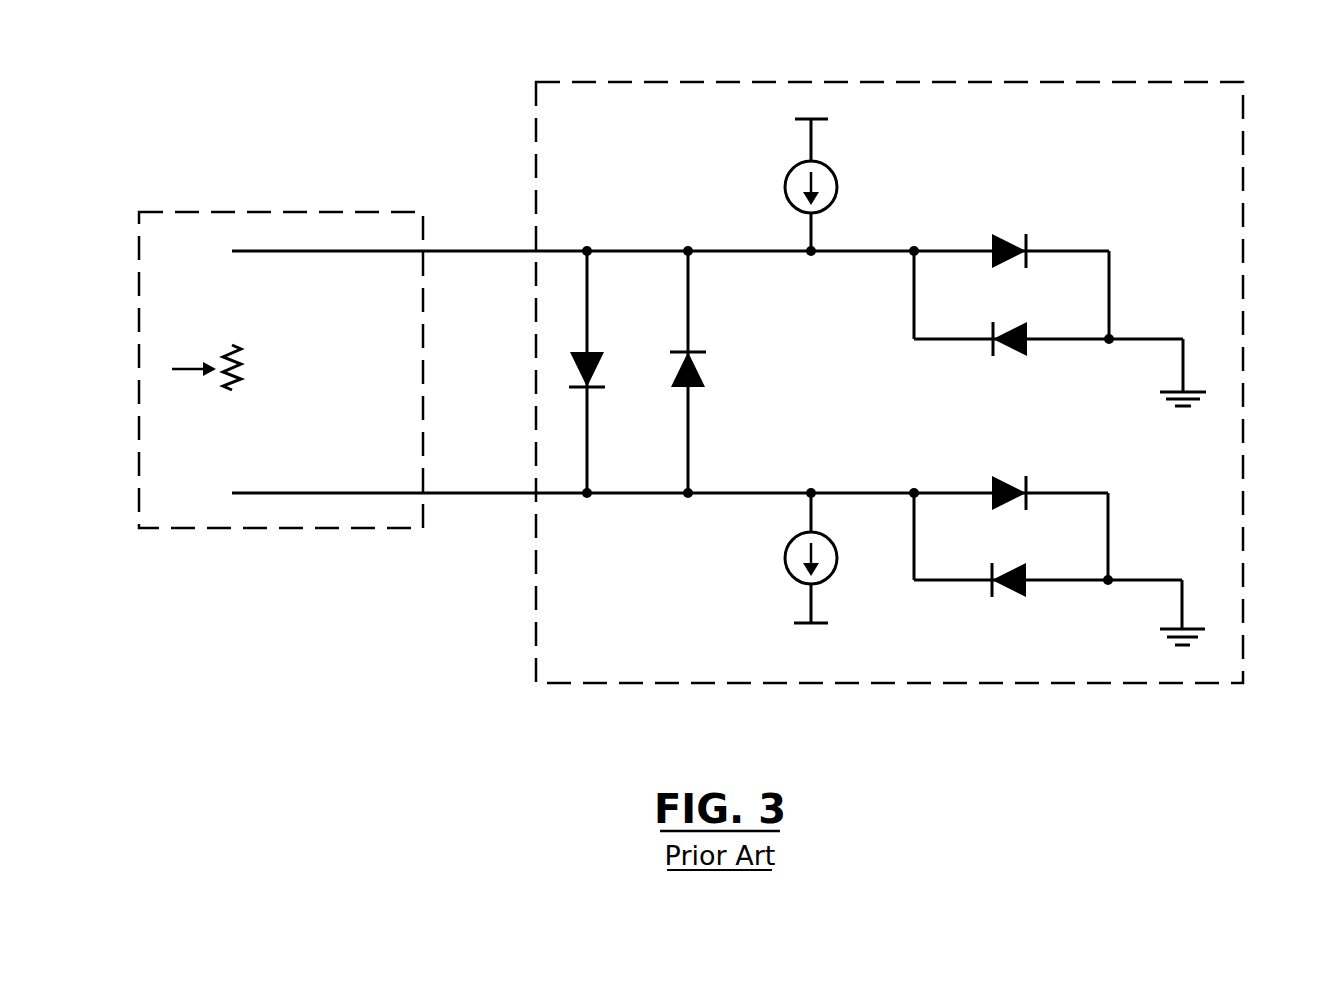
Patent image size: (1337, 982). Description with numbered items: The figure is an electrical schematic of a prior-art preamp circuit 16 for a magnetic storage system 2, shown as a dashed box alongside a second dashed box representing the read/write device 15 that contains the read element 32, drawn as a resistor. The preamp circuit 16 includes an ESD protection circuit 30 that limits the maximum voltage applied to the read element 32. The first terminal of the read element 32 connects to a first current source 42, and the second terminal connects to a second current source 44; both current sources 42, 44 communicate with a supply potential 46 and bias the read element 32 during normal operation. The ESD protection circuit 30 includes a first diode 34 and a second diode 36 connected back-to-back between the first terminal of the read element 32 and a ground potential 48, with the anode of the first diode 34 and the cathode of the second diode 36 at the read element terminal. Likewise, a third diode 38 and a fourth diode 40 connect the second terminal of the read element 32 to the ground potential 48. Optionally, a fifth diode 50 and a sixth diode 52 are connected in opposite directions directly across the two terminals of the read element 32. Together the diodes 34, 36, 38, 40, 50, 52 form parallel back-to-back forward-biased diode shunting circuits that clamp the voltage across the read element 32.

The magnetic storage system 2 is at (270, 126).
The read/write device 15 is at (137, 252).
The preamp circuit 16 is at (1247, 120).
The ESD protection circuit 30 is at (1094, 158).
The read element 32 is at (237, 380).
The first diode 34 is at (1010, 234).
The second diode 36 is at (1015, 356).
The third diode 38 is at (1008, 478).
The fourth diode 40 is at (1015, 598).
The first current source 42 is at (785, 186).
The second current source 44 is at (785, 556).
The supply potential 46 is at (815, 118).
The ground potential 48 is at (1178, 408).
The fifth diode 50 is at (590, 350).
The sixth diode 52 is at (700, 370).